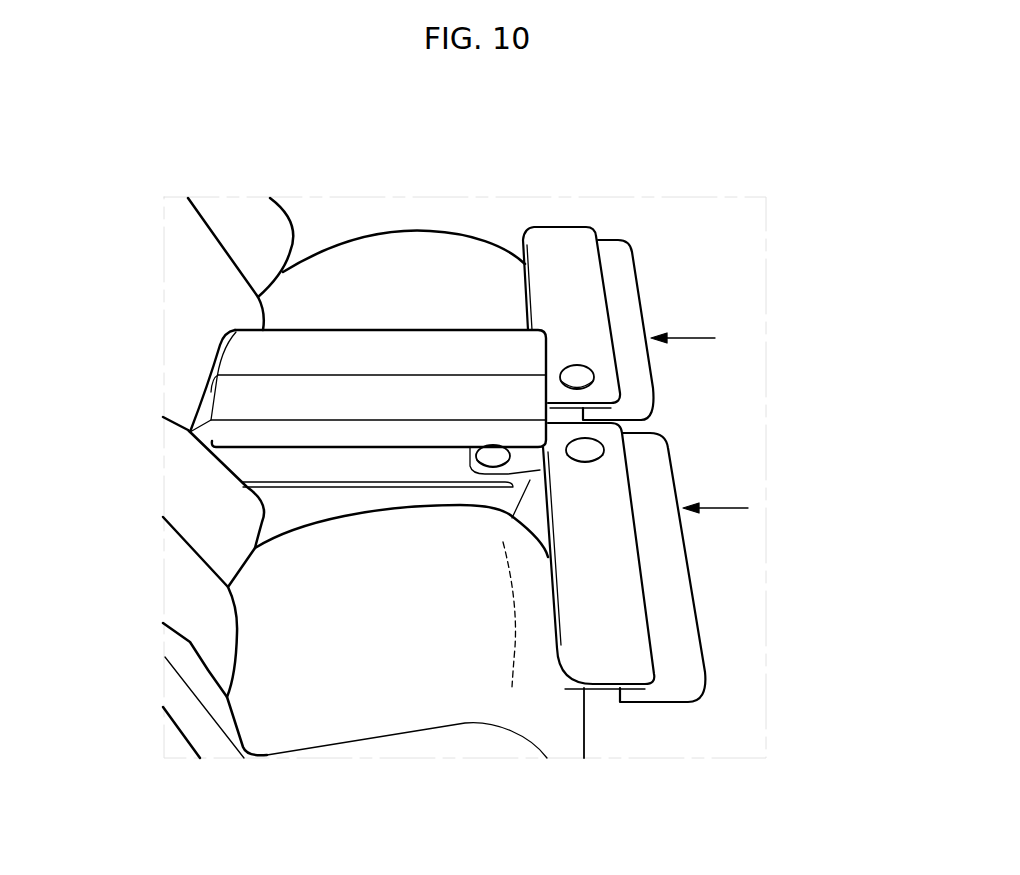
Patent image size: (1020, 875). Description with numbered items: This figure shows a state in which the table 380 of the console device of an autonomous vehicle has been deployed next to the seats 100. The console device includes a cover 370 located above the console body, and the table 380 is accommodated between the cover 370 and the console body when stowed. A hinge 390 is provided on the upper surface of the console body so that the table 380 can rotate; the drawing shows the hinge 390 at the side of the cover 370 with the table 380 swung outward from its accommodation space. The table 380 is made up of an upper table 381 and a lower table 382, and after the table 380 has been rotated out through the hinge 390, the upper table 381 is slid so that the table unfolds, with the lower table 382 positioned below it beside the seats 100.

The seat 100 is at (367, 262).
The cover 370 is at (427, 343).
The table 380 is at (710, 526).
The upper table 381 is at (582, 297).
The lower table 382 is at (670, 562).
The hinge 390 is at (590, 375).